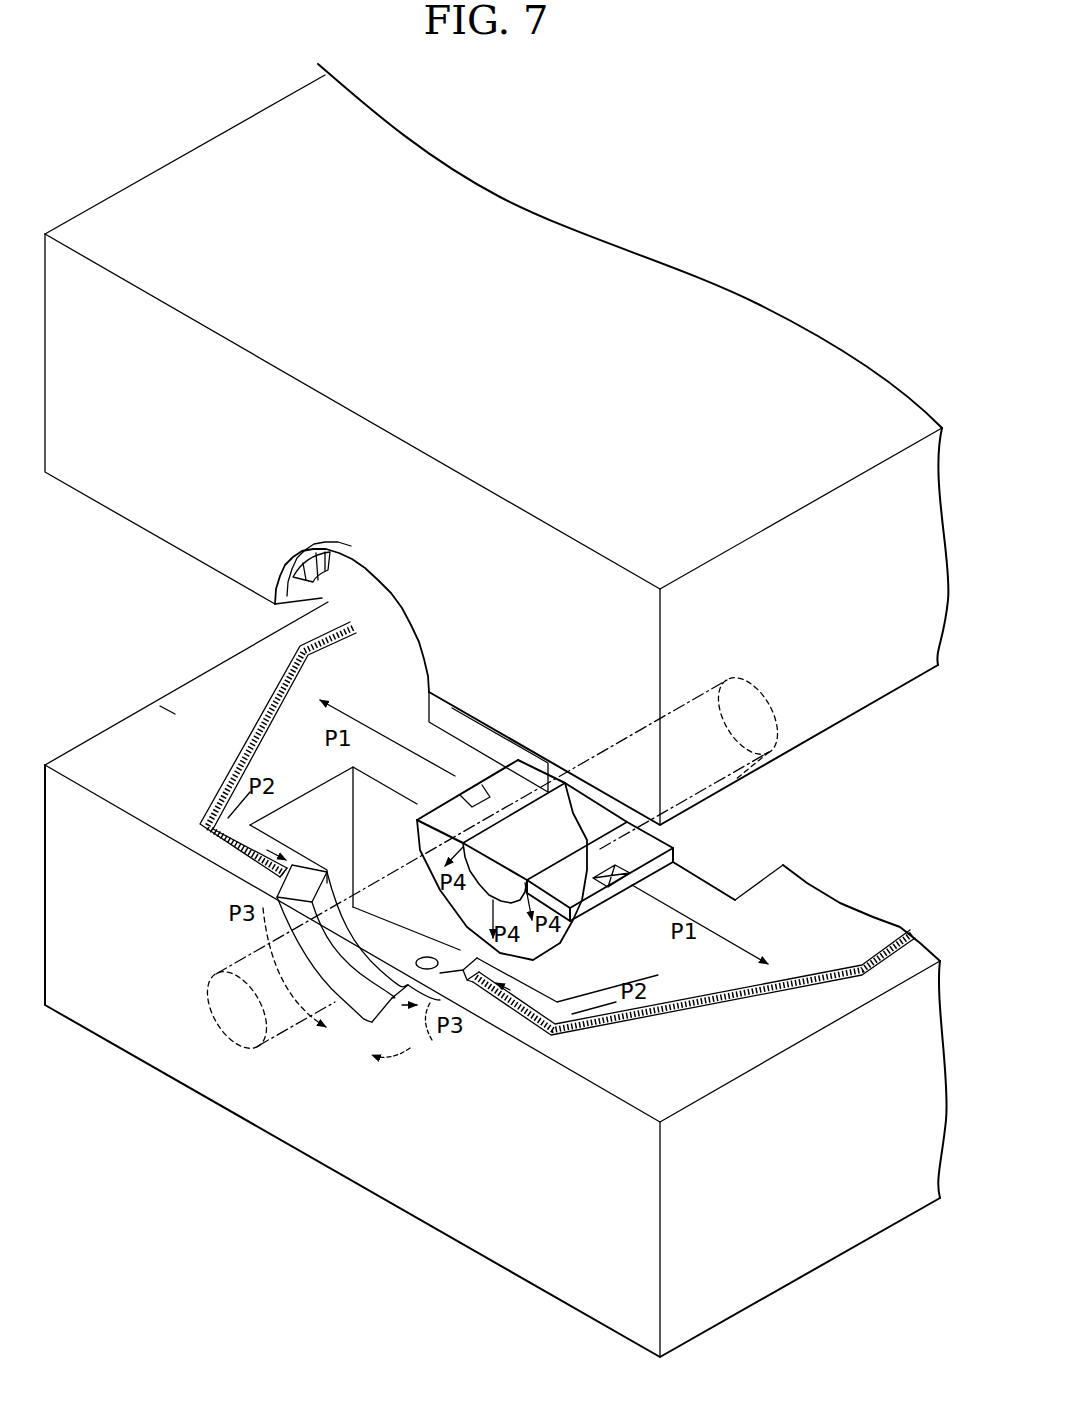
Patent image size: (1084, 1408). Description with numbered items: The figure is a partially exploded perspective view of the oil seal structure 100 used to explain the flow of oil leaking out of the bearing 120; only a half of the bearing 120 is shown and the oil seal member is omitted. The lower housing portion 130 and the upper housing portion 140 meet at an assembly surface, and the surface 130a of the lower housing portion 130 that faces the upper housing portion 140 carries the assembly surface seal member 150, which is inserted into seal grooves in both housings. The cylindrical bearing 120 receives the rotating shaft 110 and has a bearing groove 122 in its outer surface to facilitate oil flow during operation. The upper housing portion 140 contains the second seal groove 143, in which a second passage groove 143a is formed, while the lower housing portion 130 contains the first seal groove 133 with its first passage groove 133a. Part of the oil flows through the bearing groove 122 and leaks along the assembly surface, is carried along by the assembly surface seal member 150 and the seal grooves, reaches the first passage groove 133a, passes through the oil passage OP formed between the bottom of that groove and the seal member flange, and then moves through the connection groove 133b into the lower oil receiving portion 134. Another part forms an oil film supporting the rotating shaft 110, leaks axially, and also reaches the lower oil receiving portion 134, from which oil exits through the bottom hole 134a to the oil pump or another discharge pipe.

The oil seal structure 100 is at (742, 263).
The rotating shaft 110 is at (227, 1023).
The bearing 120 is at (642, 843).
The bearing groove 122 is at (630, 873).
The lower housing portion 130 is at (100, 1007).
The surface 130a is at (158, 706).
The first seal groove 133 is at (368, 1060).
The first passage groove 133a is at (428, 1040).
The connection groove 133b is at (363, 1033).
The lower oil receiving portion 134 is at (395, 818).
The bottom hole 134a is at (443, 957).
The upper housing portion 140 is at (110, 498).
The second seal groove 143 is at (320, 570).
The second passage groove 143a is at (297, 555).
The assembly surface seal member 150 is at (247, 697).
The oil passage OP is at (273, 883).